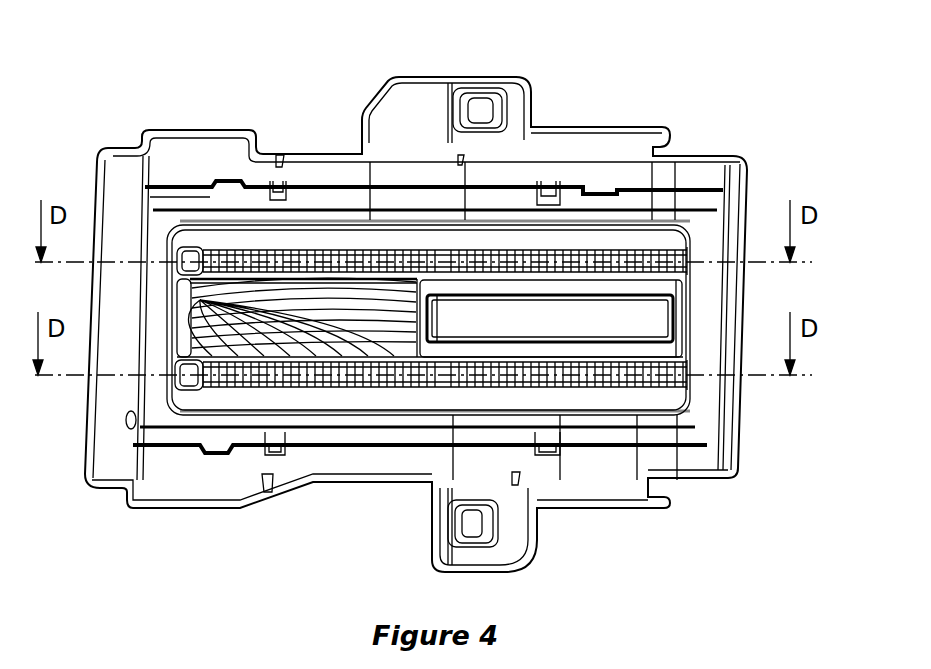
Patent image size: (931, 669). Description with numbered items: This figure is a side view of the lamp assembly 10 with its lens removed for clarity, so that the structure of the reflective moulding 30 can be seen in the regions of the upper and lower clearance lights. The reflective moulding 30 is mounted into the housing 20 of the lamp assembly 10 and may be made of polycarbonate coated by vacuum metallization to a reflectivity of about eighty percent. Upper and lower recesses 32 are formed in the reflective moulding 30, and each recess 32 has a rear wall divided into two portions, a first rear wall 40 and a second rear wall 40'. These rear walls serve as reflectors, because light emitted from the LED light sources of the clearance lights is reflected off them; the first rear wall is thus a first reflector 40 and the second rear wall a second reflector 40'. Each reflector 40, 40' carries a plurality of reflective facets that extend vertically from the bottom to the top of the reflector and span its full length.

The lamp assembly 10 is at (599, 80).
The housing 20 is at (232, 131).
The reflective moulding 30 is at (683, 320).
The recess 32 is at (230, 250).
The first reflector 40 is at (324, 328).
The second reflector 40' is at (566, 328).